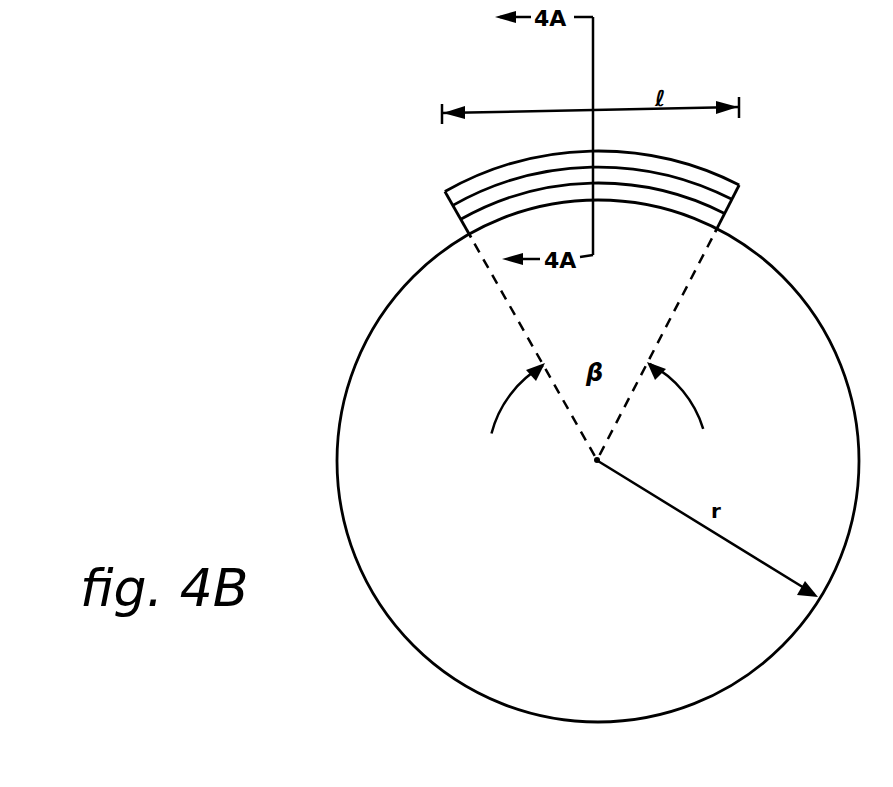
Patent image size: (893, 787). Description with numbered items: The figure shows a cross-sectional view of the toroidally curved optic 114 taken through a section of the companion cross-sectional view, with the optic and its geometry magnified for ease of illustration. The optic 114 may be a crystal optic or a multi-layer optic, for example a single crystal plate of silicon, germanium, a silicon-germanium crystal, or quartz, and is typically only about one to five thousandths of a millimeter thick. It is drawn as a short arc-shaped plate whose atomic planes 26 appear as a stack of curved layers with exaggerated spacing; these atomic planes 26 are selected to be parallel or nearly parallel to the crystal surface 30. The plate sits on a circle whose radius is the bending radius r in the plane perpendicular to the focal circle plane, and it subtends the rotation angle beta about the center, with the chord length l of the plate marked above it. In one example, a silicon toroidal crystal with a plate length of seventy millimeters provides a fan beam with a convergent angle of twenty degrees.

The toroidally curved crystal optic 114 is at (466, 178).
The atomic planes 26 is at (740, 190).
The crystal surface 30 is at (652, 209).